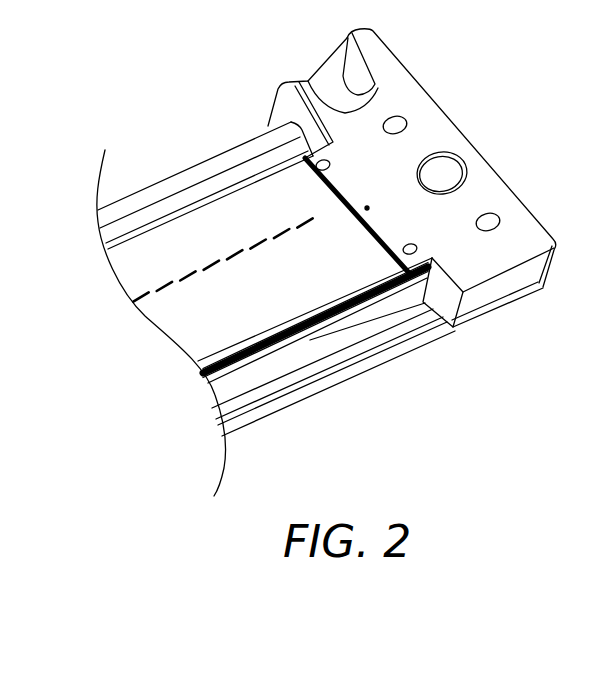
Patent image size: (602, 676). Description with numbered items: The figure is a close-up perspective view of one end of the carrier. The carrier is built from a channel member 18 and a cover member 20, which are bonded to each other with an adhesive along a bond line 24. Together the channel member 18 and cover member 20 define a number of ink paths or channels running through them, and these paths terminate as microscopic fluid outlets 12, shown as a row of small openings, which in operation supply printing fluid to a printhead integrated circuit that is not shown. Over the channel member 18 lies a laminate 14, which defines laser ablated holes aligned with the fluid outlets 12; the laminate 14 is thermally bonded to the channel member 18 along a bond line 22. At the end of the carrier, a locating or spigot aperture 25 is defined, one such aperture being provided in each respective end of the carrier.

The fluid outlets 12 is at (268, 233).
The laminate 14 is at (140, 268).
The channel member 18 is at (233, 392).
The cover member 20 is at (230, 440).
The bond line 22 is at (372, 276).
The bond line 24 is at (410, 340).
The locating or spigot apertures 25 is at (448, 170).